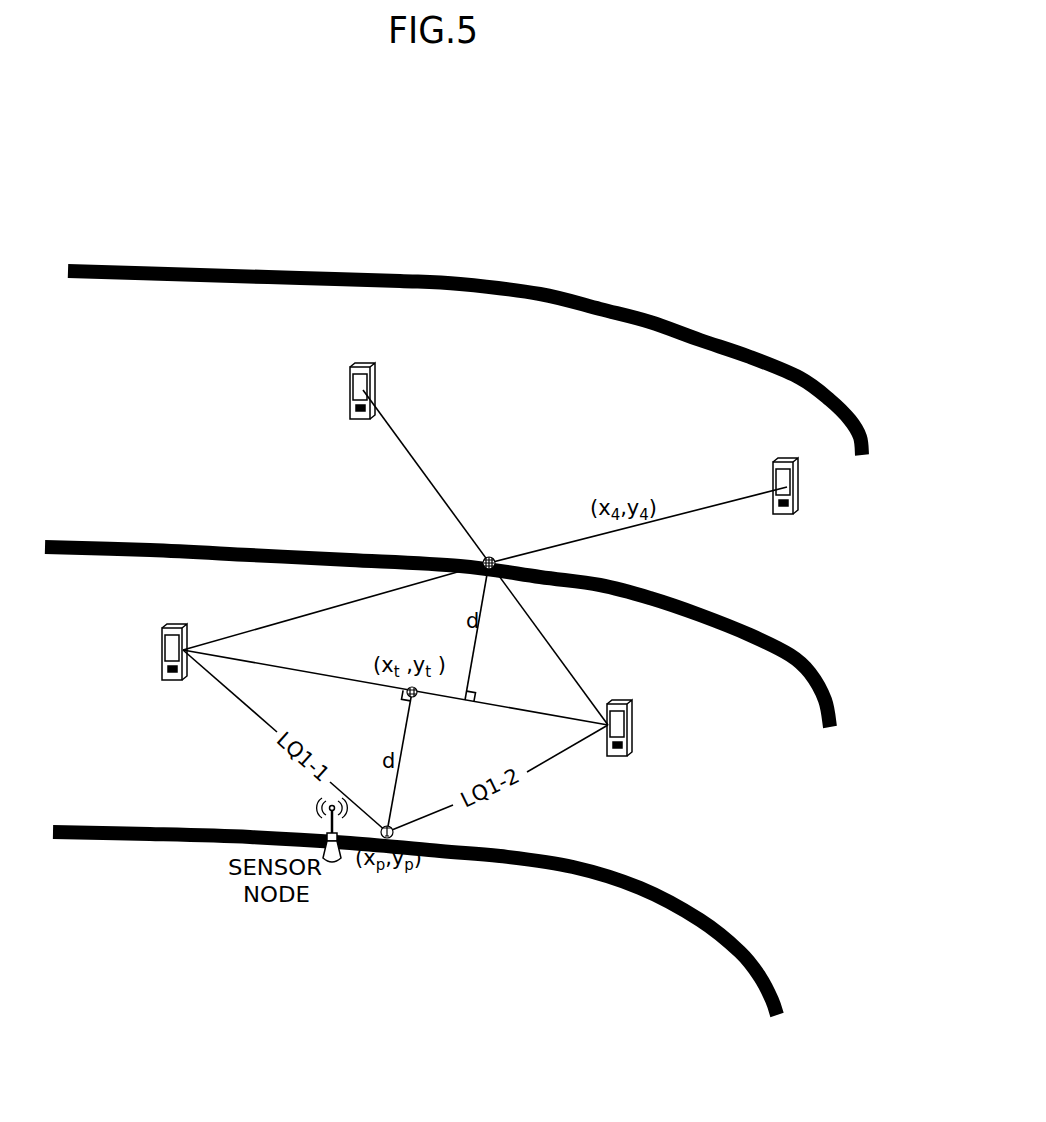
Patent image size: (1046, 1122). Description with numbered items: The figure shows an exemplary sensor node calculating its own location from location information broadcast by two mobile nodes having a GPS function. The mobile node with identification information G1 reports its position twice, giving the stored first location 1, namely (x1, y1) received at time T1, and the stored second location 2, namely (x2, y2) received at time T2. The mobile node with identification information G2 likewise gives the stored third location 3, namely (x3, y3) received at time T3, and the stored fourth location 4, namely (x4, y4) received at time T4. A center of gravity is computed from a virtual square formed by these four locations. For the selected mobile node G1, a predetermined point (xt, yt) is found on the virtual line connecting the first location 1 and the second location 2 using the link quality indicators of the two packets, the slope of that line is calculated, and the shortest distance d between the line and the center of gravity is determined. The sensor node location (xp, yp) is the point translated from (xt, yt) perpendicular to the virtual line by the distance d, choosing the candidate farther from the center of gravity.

The mobile node having GPS function (G1,T1) at (x1,y1) 1 is at (139, 705).
The mobile node having GPS function (G1,T2) at (x2,y2) 2 is at (665, 780).
The mobile node having GPS function (G2,T3) at (x3,y3) 3 is at (791, 539).
The mobile node having GPS function (G2,T4) at (x4,y4) 4 is at (307, 445).